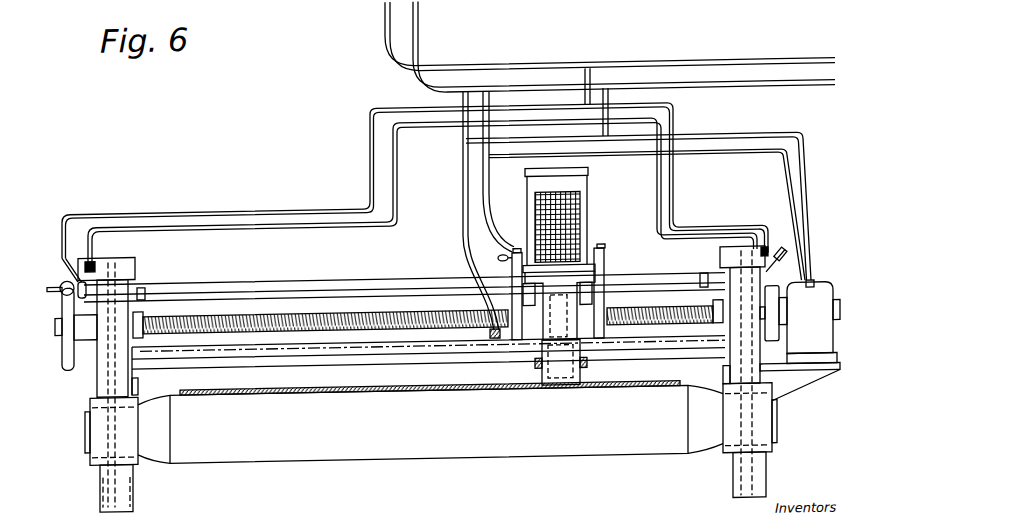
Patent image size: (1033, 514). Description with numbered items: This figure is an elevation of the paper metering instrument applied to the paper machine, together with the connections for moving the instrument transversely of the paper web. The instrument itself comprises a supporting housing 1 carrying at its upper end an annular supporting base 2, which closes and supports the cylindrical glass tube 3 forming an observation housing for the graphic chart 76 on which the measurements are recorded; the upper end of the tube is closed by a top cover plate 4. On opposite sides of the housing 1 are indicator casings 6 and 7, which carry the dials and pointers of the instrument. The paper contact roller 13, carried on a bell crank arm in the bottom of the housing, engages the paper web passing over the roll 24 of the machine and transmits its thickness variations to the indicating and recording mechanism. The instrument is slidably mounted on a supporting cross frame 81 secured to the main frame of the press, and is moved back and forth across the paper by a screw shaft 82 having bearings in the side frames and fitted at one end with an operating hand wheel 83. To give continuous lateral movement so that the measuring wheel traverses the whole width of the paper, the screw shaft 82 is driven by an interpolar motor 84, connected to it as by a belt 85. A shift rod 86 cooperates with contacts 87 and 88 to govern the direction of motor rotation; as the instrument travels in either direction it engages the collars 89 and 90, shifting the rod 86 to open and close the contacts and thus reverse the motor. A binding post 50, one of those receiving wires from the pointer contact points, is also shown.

The supporting housing 1 is at (533, 333).
The annular supporting base 2 is at (583, 266).
The cylindrical glass tube 3 is at (535, 201).
The top cover plate 4 is at (525, 173).
The indicator casing 6 is at (512, 268).
The indicator casing 7 is at (605, 260).
The paper contact roller 13 is at (562, 371).
The roller 24 is at (325, 387).
The binding post 50 is at (492, 338).
The graphic chart 76 is at (580, 199).
The supporting cross frame 81 is at (368, 287).
The screw shaft 82 is at (395, 310).
The operating hand wheel 83 is at (70, 364).
The interpolar motor 84 is at (812, 286).
The belt 85 is at (772, 318).
The shift rod 86 is at (280, 286).
The contact 87 is at (91, 258).
The contact 88 is at (761, 254).
The collar 89 is at (142, 281).
The collar 90 is at (700, 283).